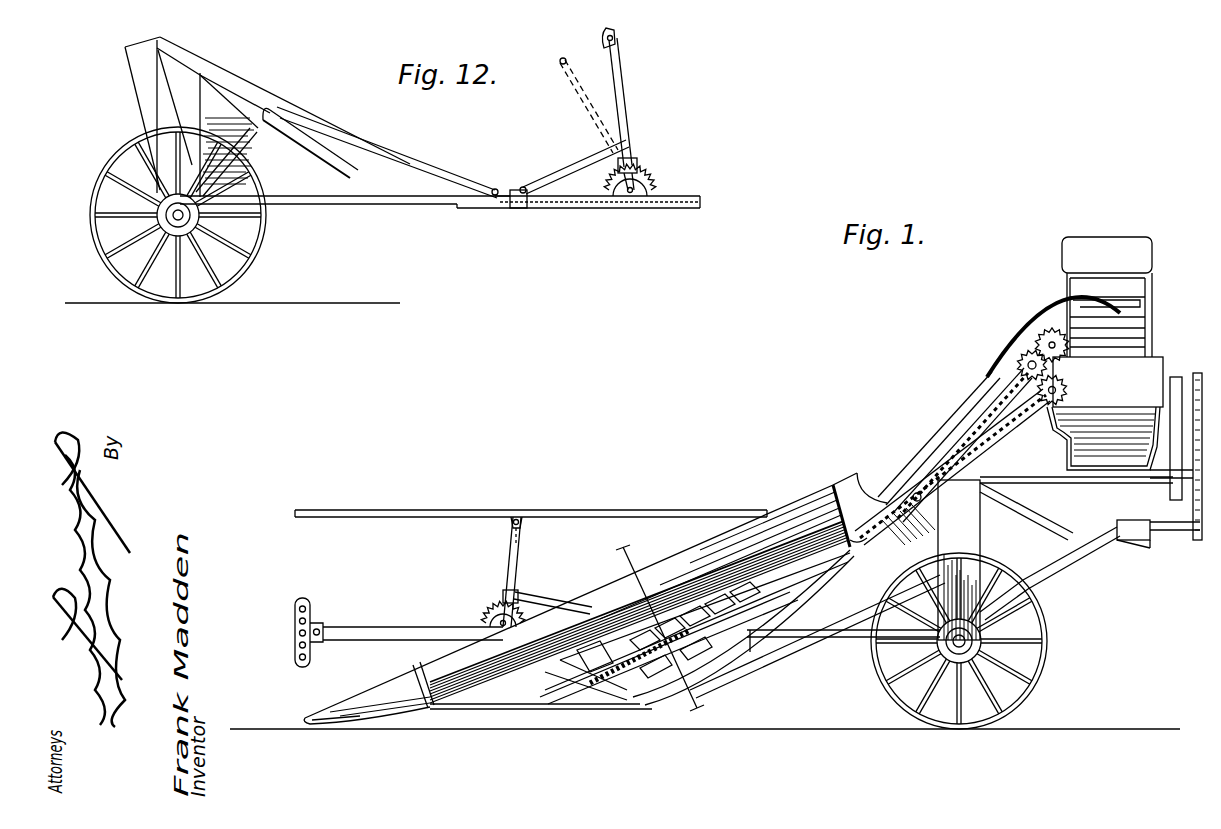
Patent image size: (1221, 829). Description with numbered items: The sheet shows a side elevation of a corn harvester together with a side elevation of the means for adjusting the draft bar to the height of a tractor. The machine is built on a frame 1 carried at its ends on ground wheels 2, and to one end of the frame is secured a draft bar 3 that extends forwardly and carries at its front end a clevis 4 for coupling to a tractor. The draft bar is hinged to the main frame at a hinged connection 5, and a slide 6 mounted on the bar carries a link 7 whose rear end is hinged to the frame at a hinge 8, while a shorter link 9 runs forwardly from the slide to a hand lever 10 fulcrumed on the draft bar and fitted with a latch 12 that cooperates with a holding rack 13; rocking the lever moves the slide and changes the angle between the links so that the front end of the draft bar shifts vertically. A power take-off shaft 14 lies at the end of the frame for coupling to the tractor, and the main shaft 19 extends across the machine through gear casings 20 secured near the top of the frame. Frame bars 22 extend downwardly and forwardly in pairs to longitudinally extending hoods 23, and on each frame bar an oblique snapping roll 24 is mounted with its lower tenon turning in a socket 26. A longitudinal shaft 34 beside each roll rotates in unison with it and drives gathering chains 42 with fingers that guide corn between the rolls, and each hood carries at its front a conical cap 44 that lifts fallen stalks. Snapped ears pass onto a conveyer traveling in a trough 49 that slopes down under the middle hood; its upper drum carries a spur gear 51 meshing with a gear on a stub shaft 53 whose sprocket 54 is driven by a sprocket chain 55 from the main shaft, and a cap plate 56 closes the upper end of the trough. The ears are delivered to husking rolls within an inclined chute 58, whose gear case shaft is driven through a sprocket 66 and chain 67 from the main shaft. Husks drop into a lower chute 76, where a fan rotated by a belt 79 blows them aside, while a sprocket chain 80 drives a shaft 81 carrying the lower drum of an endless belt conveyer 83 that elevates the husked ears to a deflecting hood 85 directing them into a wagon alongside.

In FIG. 12, the frame 1 is at (165, 110).
In FIG. 1, the frame 1 is at (963, 537).
In FIG. 12, the ground wheels 2 is at (195, 303).
In FIG. 1, the ground wheels 2 is at (1047, 667).
In FIG. 12, the draft bar 3 is at (380, 208).
In FIG. 1, the draft bar 3 is at (375, 635).
In FIG. 1, the clevis 4 is at (310, 614).
In FIG. 12, the hinged connection 5 is at (250, 176).
In FIG. 1, the hinged connection 5 is at (655, 633).
In FIG. 12, the slide 6 is at (517, 208).
In FIG. 12, the link 7 is at (437, 167).
In FIG. 12, the hinge of link to main frame 8 is at (266, 106).
In FIG. 12, the shorter link 9 is at (555, 168).
In FIG. 1, the shorter link 9 is at (540, 594).
In FIG. 12, the hand lever 10 is at (616, 106).
In FIG. 1, the hand lever 10 is at (525, 552).
In FIG. 12, the latch 12 is at (620, 60).
In FIG. 12, the holding rack 13 is at (650, 172).
In FIG. 1, the holding rack 13 is at (493, 610).
In FIG. 1, the power take-off shaft 14 is at (620, 507).
In FIG. 1, the main shaft 19 is at (917, 502).
In FIG. 1, the gear casings 20 is at (890, 490).
In FIG. 1, the frame bars 22 is at (636, 710).
In FIG. 1, the hoods 23 is at (757, 523).
In FIG. 1, the snapping roll 24 is at (718, 700).
In FIG. 1, the socket 26 is at (615, 690).
In FIG. 1, the longitudinal shaft 34 is at (670, 590).
In FIG. 1, the chains 42 is at (567, 625).
In FIG. 1, the conical cap 44 is at (365, 712).
In FIG. 1, the trough 49 is at (762, 650).
In FIG. 1, the spur gear 51 is at (1040, 333).
In FIG. 1, the stub shaft 53 is at (1020, 358).
In FIG. 1, the sprocket 54 is at (1003, 380).
In FIG. 1, the sprocket chain 55 is at (972, 414).
In FIG. 1, the cap plate 56 is at (1047, 310).
In FIG. 1, the chute 58 is at (1133, 383).
In FIG. 1, the sprocket 66 is at (1066, 390).
In FIG. 1, the chain 67 is at (1007, 441).
In FIG. 1, the lower chute 76 is at (1127, 535).
In FIG. 1, the belt 79 is at (1173, 443).
In FIG. 1, the sprocket chain 80 is at (1192, 512).
In FIG. 1, the shaft 81 is at (1167, 535).
In FIG. 1, the endless belt conveyer 83 is at (1123, 297).
In FIG. 1, the deflecting hood 85 is at (1100, 243).